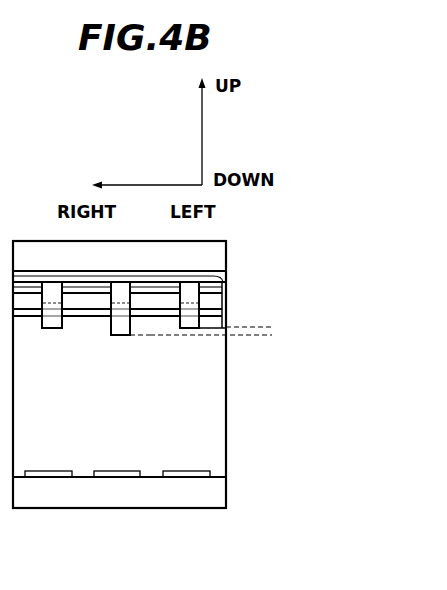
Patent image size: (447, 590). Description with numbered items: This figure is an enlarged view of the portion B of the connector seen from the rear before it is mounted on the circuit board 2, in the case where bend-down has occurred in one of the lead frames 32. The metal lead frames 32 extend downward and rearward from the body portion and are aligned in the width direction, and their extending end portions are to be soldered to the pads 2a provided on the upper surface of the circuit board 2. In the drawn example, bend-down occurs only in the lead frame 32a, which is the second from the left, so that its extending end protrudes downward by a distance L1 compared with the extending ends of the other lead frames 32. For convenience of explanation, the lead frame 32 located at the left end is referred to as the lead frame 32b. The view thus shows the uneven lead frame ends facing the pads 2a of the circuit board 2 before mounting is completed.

The circuit board 2 is at (186, 512).
The pads 2a is at (196, 471).
The lead frames 32 is at (52, 324).
The lead frame 32a is at (119, 331).
The lead frame 32b is at (189, 325).
The portion B is at (227, 398).
The distance L1 is at (261, 367).